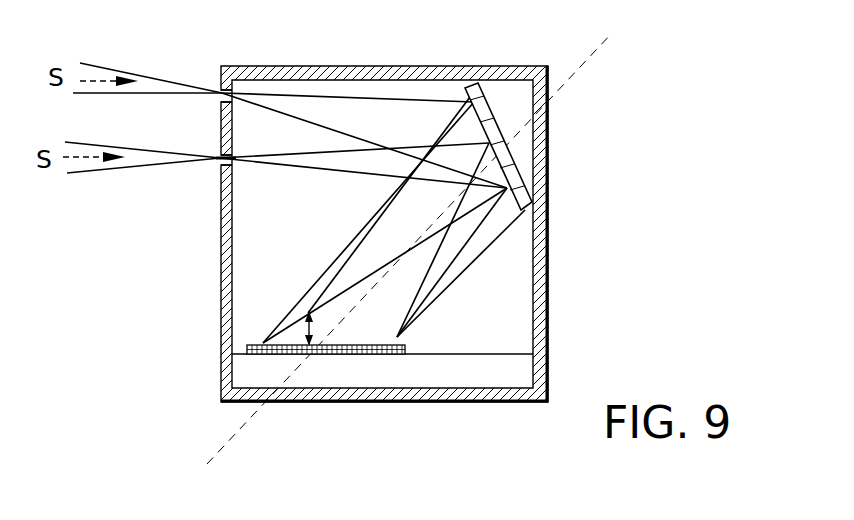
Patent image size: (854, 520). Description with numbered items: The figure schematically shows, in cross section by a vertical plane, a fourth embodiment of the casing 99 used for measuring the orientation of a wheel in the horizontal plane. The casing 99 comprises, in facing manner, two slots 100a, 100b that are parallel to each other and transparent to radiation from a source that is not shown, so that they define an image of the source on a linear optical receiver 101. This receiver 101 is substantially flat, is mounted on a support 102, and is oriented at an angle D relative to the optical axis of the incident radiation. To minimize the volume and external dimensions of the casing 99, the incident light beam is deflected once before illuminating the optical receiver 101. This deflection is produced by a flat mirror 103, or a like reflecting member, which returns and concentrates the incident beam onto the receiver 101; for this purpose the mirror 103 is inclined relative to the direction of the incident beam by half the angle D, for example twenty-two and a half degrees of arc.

The casing 99 is at (221, 305).
The slot 100a is at (222, 93).
The slot 100b is at (218, 166).
The linear optical receiver 101 is at (343, 345).
The support 102 is at (512, 347).
The flat mirror 103 is at (498, 118).
The angle D is at (311, 320).